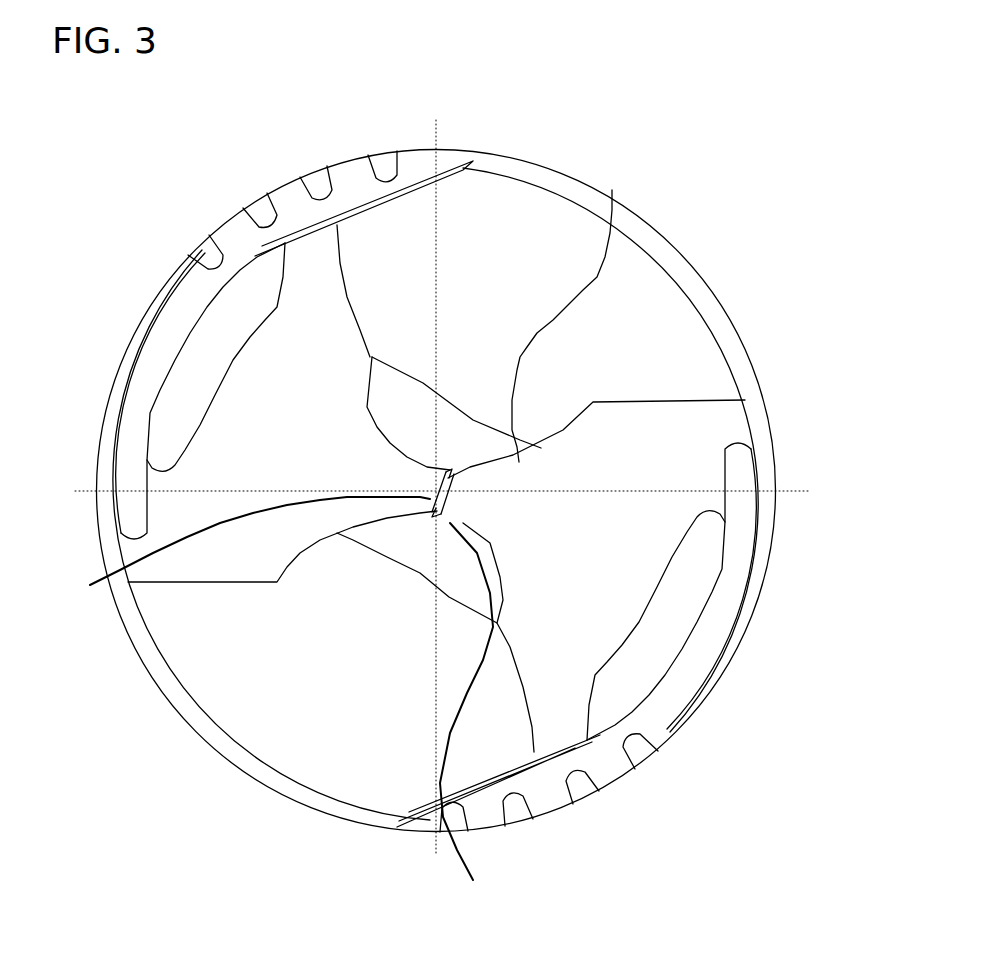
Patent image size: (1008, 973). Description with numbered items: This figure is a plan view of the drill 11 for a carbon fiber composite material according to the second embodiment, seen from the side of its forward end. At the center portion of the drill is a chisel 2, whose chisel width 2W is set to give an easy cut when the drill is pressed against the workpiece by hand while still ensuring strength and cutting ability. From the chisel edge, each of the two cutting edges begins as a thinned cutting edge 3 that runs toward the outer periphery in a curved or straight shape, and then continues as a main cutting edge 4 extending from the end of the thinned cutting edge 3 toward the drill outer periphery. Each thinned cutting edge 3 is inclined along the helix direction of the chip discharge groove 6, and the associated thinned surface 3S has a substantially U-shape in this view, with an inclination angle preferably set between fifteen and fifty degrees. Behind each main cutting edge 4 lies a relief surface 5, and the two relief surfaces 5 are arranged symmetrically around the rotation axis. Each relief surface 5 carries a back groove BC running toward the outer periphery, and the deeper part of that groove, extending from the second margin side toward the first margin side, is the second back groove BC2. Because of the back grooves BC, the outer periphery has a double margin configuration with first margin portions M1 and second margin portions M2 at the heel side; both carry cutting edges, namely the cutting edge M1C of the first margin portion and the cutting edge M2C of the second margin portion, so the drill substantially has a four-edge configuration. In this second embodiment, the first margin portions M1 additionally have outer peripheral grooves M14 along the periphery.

The drill for a carbon fiber composite material according to the second embodiment 11 is at (707, 187).
The chisel 2 is at (248, 555).
The chisel width 2W is at (463, 698).
The thinned cutting edge 3 is at (612, 190).
The thinned surface 3S is at (400, 387).
The main cutting edge 4 is at (657, 397).
The relief surface 5 is at (620, 533).
The chip discharge groove 6 is at (337, 722).
The back groove BC is at (727, 500).
The second back groove BC2 is at (660, 583).
The first margin portion M1 is at (751, 424).
The cutting edge of the first margin portion M1C is at (746, 394).
The second margin portion M2 is at (567, 745).
The cutting edge of the second margin portion M2C is at (547, 787).
The outer peripheral groove M14 is at (243, 208).